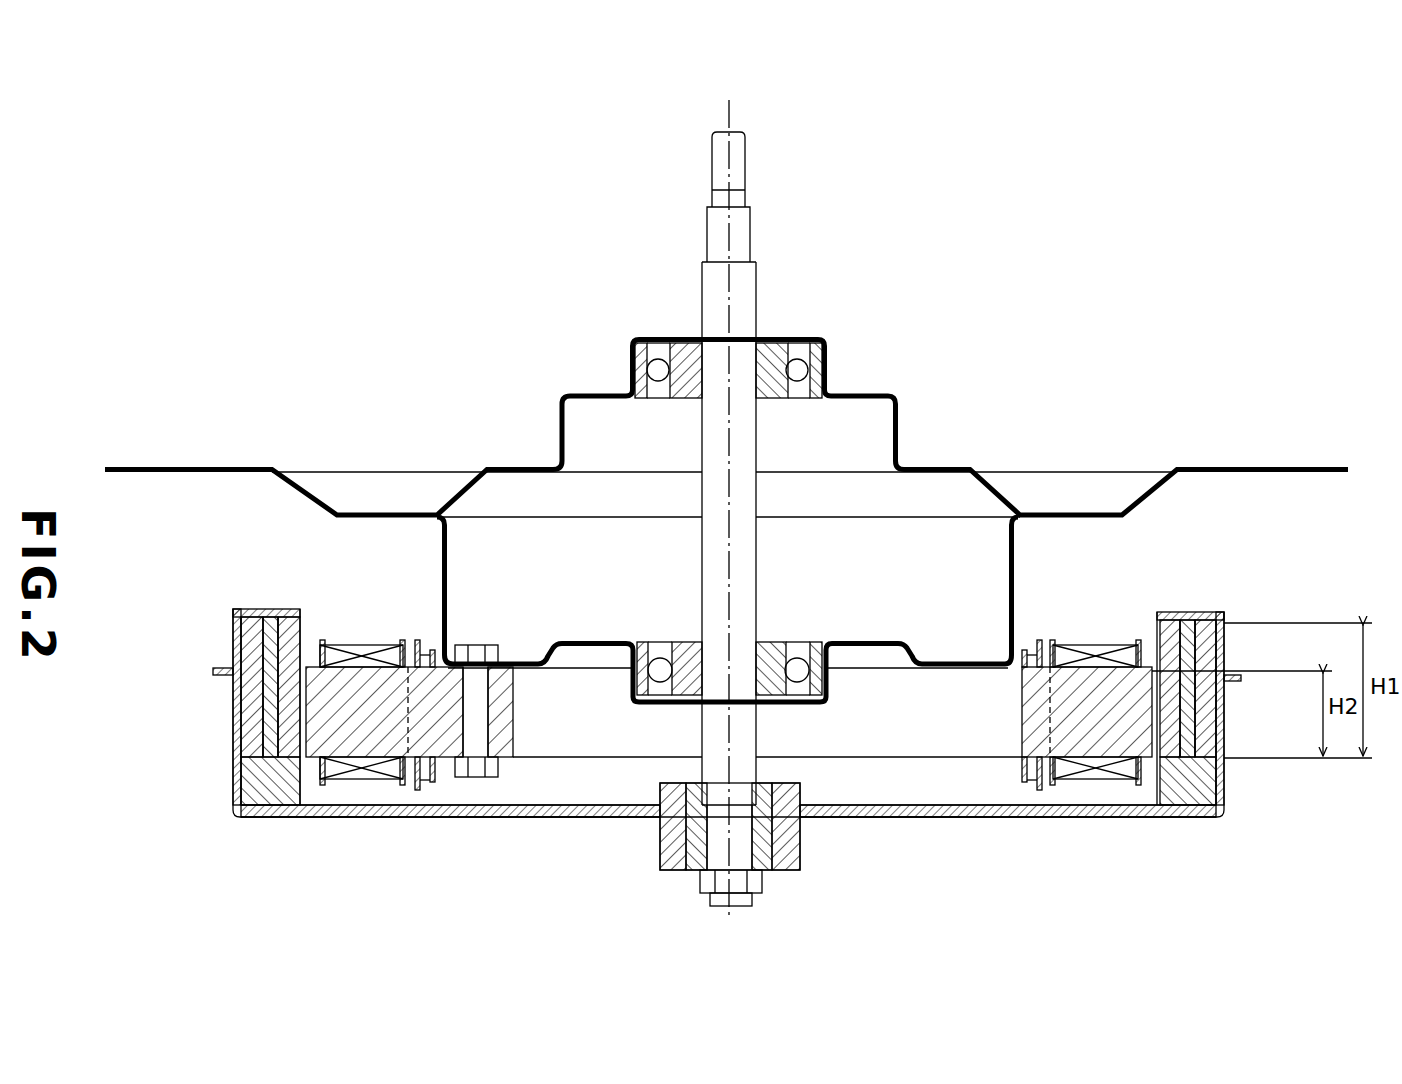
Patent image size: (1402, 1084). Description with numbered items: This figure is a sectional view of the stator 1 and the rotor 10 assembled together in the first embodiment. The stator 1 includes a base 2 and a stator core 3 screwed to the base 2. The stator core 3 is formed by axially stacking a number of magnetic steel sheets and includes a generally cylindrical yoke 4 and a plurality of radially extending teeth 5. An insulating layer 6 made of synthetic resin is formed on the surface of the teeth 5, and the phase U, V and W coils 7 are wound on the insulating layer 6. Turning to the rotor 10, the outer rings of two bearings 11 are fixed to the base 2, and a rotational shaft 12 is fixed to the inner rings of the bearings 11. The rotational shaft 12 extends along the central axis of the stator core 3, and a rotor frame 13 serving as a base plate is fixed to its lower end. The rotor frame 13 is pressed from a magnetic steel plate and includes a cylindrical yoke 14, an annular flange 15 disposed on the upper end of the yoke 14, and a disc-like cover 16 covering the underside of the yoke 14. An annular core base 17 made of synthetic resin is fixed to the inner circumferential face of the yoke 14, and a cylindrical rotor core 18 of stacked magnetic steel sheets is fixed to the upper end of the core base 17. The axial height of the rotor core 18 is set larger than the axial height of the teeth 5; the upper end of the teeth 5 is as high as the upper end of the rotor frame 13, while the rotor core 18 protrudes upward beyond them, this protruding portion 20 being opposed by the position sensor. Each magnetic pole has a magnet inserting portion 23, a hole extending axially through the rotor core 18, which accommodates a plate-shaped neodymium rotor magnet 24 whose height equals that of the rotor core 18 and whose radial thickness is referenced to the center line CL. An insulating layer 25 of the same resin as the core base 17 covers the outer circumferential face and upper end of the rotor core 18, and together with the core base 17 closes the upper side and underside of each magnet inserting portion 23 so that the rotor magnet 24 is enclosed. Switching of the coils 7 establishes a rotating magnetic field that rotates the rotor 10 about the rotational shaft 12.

The stator 1 is at (1055, 642).
The base 2 is at (442, 553).
The stator core 3 is at (350, 665).
The yoke 4 is at (568, 662).
The teeth 5 is at (300, 728).
The insulating layer 6 is at (1138, 645).
The coils 7 is at (375, 790).
The rotor 10 is at (585, 822).
The bearings 11 is at (828, 350).
The rotational shaft 12 is at (760, 722).
The rotor frame 13 is at (1220, 816).
The yoke 14 is at (233, 786).
The annular flange 15 is at (215, 674).
The cover 16 is at (918, 820).
The core base 17 is at (276, 800).
The rotor core 18 is at (245, 745).
The protruding portion 20 is at (1200, 614).
The magnet inserting portion 23 is at (233, 643).
The rotor magnet 24 is at (233, 706).
The insulating layer 25 is at (285, 608).
The center line CL is at (735, 432).